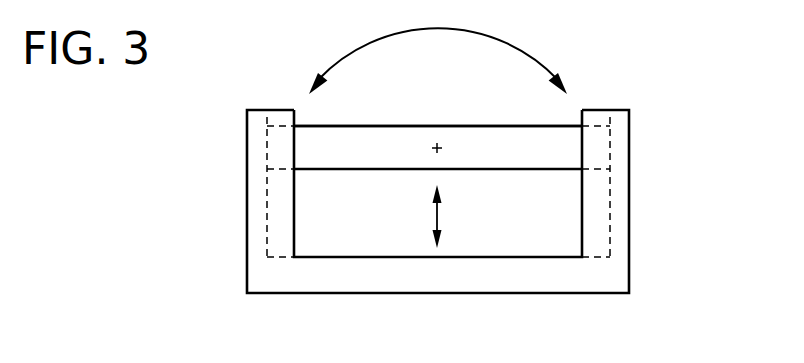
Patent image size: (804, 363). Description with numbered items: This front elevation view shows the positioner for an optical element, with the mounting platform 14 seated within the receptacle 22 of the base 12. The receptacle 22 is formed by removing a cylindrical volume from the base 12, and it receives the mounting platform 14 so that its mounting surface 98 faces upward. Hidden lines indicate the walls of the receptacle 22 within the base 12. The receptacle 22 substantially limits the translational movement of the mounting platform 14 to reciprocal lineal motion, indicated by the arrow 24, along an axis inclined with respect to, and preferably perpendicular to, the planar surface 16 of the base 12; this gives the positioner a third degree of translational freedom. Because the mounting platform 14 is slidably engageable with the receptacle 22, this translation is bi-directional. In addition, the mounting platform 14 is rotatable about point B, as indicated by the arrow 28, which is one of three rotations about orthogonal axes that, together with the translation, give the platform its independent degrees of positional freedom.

The base 12 is at (629, 200).
The mounting platform 14 is at (488, 126).
The planar surface 16 is at (293, 293).
The receptacle 22 is at (519, 225).
The arrow 24 is at (436, 216).
The arrow 28 is at (522, 53).
The mounting surface 98 is at (371, 126).
The point B is at (434, 148).